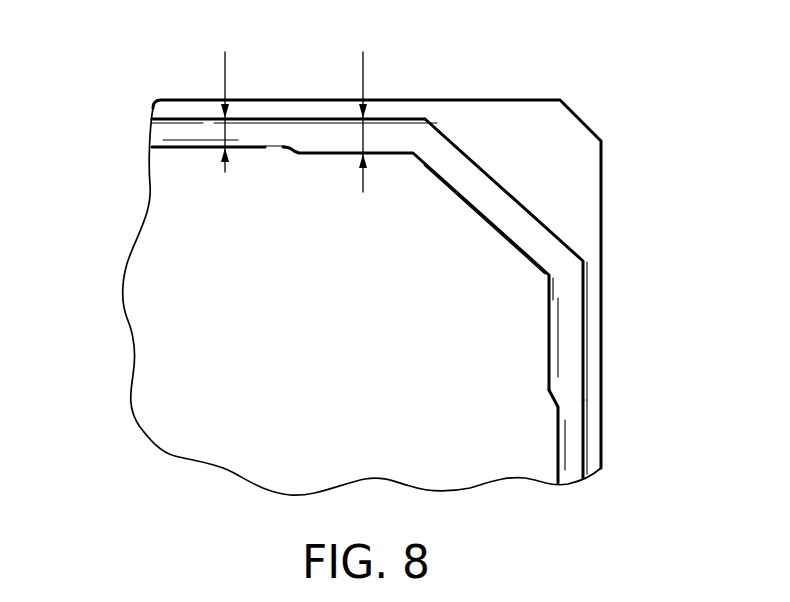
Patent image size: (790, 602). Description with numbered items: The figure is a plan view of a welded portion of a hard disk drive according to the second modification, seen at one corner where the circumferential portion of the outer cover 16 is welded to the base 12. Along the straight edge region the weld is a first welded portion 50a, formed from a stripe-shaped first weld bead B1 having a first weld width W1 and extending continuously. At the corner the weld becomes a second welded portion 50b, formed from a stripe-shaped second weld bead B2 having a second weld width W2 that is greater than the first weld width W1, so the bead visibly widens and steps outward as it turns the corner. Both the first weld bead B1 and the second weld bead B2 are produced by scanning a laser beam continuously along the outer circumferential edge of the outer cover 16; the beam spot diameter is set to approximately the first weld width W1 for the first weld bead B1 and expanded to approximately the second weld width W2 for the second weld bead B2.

The base 12 is at (590, 186).
The outer cover 16 is at (141, 396).
The first welded portion 50a is at (277, 168).
The second welded portion 50b is at (549, 394).
The first weld bead B1 is at (255, 130).
The second weld bead B2 is at (441, 155).
The first weld width W1 is at (224, 97).
The second weld width W2 is at (362, 107).